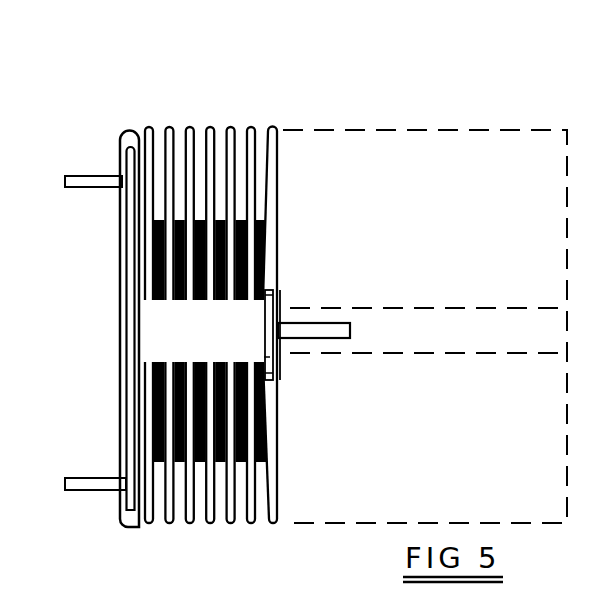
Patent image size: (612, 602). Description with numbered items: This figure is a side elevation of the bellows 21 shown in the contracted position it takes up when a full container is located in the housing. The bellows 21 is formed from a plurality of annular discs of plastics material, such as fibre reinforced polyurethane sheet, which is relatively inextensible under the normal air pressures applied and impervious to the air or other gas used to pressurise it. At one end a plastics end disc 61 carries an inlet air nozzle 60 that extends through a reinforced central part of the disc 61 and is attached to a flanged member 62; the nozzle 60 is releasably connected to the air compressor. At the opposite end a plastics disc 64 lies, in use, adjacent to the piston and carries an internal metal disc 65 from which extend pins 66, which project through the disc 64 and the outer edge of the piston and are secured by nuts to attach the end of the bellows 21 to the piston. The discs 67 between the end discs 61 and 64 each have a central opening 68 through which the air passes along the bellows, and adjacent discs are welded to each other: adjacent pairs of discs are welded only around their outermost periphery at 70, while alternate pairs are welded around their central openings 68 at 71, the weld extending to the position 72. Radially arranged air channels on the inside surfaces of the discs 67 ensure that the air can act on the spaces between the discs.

The bellows 21 is at (214, 109).
The inlet air nozzle 60 is at (332, 337).
The plastics end disc 61 is at (277, 234).
The flanged member 62 is at (268, 358).
The plastics disc 64 is at (118, 315).
The internal metal disc 65 is at (127, 395).
The pins 66 is at (82, 178).
The discs 67 is at (159, 140).
The central opening 68 is at (177, 334).
The outermost periphery weld 70 is at (252, 127).
The central opening weld 71 is at (205, 298).
The weld end position 72 is at (265, 220).